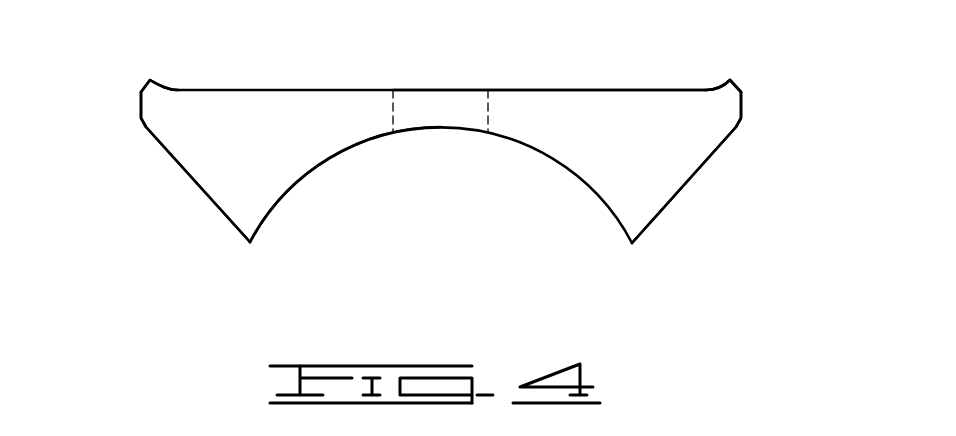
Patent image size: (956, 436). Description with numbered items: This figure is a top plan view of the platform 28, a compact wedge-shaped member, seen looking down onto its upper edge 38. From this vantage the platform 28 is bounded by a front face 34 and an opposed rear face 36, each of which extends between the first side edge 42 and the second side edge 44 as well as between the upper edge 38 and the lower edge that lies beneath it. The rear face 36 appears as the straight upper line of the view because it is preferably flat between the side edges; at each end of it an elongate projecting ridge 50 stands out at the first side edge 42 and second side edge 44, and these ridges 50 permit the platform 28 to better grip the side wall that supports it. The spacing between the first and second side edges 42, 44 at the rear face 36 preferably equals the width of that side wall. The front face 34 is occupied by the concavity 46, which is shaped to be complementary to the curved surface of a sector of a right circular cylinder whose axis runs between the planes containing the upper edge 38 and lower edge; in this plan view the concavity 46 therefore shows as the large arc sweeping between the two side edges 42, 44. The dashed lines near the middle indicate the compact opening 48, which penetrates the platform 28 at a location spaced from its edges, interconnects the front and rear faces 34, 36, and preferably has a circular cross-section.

The platform 28 is at (357, 100).
The front face 34 is at (568, 172).
The rear face 36 is at (519, 90).
The upper edge 38 is at (470, 132).
The first side edge 42 is at (140, 90).
The second side edge 44 is at (742, 92).
The concavity 46 is at (330, 162).
The opening 48 is at (438, 100).
The projecting ridge 50 is at (150, 80).